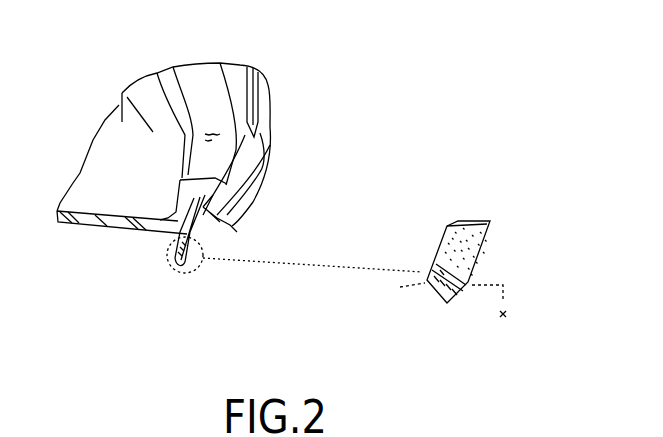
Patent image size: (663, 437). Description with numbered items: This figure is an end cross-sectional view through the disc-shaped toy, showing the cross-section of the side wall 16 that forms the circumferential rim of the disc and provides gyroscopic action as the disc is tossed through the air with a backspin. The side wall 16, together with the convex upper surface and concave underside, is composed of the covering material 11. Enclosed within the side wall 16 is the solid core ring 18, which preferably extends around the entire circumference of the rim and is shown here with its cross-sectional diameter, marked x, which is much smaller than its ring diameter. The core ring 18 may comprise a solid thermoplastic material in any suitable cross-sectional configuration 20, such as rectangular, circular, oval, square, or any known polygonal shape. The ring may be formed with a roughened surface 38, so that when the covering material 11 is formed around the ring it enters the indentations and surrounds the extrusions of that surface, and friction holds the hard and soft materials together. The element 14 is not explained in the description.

The shoe upper 11 is at (240, 87).
The toe portion of shoe 14 is at (120, 107).
The heel portion of shoe 16 is at (270, 128).
The strap connector 18 is at (237, 232).
The strap end 20 is at (178, 287).
The attachment block 38 is at (490, 223).